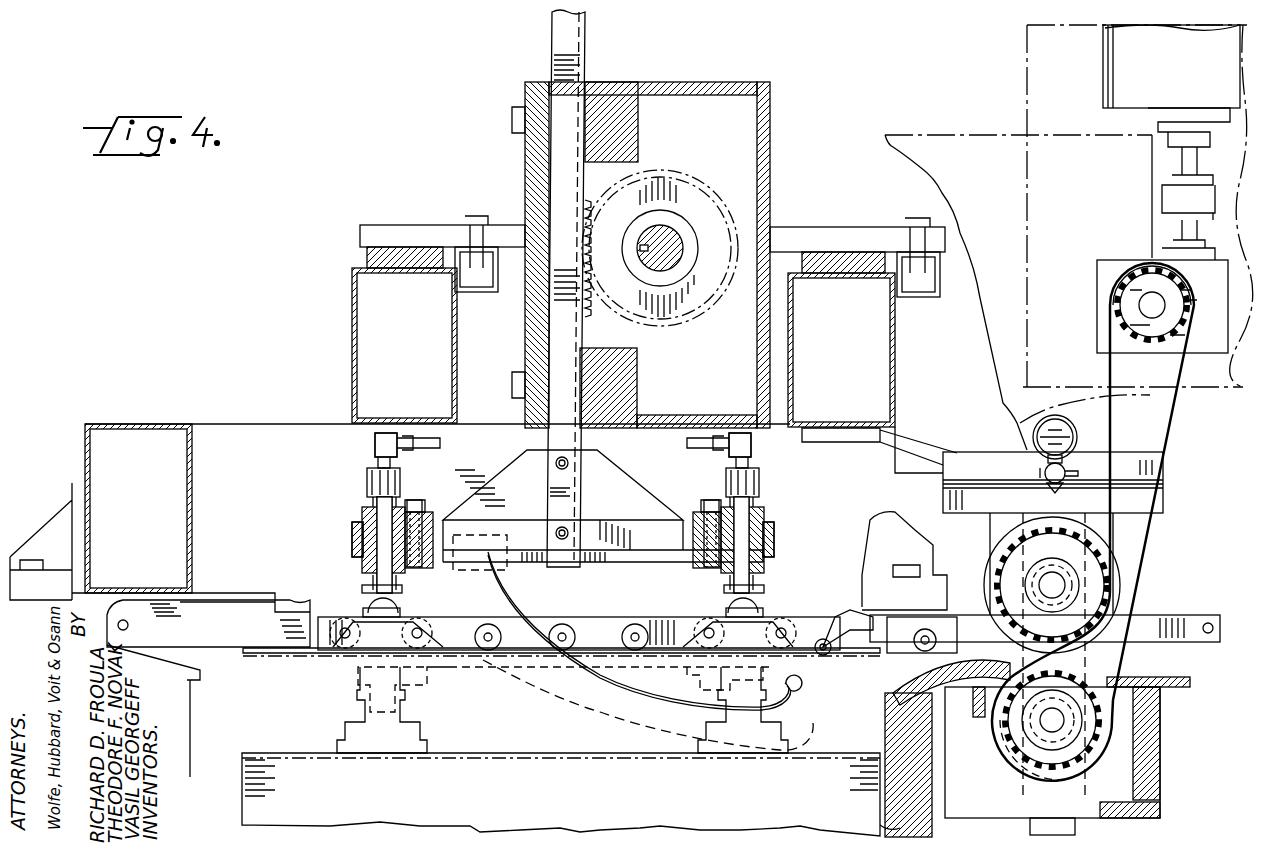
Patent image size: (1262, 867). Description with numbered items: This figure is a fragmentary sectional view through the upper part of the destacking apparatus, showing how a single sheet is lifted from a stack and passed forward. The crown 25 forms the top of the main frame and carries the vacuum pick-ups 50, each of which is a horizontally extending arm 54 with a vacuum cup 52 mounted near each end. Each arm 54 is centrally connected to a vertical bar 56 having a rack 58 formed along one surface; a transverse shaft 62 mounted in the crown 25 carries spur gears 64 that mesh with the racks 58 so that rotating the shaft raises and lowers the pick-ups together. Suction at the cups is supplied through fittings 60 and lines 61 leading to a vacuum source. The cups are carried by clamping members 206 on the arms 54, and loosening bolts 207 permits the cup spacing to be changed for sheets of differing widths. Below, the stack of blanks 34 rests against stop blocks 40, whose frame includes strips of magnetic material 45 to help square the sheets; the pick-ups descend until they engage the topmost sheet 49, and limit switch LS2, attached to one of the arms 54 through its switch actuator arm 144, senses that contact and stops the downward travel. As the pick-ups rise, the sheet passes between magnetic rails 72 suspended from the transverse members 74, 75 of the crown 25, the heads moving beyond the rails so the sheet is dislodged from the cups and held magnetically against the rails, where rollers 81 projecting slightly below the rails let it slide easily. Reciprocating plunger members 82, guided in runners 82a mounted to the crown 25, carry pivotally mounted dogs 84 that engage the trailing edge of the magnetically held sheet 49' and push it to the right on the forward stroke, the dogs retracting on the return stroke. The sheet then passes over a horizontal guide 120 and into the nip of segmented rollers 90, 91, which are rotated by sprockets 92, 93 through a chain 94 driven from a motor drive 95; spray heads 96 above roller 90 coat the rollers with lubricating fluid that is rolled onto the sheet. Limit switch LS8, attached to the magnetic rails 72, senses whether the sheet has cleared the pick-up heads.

The crown 25 is at (512, 194).
The stack of sheet metal blanks 34 is at (260, 795).
The stop block 40 is at (882, 750).
The strip of magnetic material 45 is at (877, 827).
The topmost sheet 49 is at (561, 737).
The magnetically held sheet 49' is at (552, 669).
The vacuum pick-up 50 is at (347, 488).
The vacuum cup 52 is at (360, 733).
The horizontally extending arm 54 is at (615, 562).
The vertical bar 56 is at (560, 30).
The rack 58 is at (592, 306).
The fitting 60 is at (375, 445).
The line 61 is at (440, 444).
The transverse shaft 62 is at (665, 240).
The spur gear 64 is at (596, 200).
The magnetic rail 72 is at (443, 655).
The transverse member 74 is at (352, 308).
The transverse member 75 is at (895, 352).
The roller 81 is at (575, 640).
The reciprocating plunger member 82 is at (1192, 610).
The runner 82a is at (245, 607).
The dog 84 is at (208, 623).
The segmented roller 90 is at (992, 562).
The segmented roller 91 is at (1115, 740).
The sprocket 92 is at (1000, 590).
The sprocket 93 is at (1100, 693).
The chain 94 is at (1150, 548).
The motor drive 95 is at (1136, 243).
The spray head 96 is at (1050, 478).
The horizontal guide 120 is at (877, 690).
The switch actuator arm 144 is at (575, 712).
The clamping member 206 is at (355, 563).
The bolt 207 is at (418, 500).
The limit switch LS2 is at (490, 578).
The limit switch LS8 is at (836, 665).